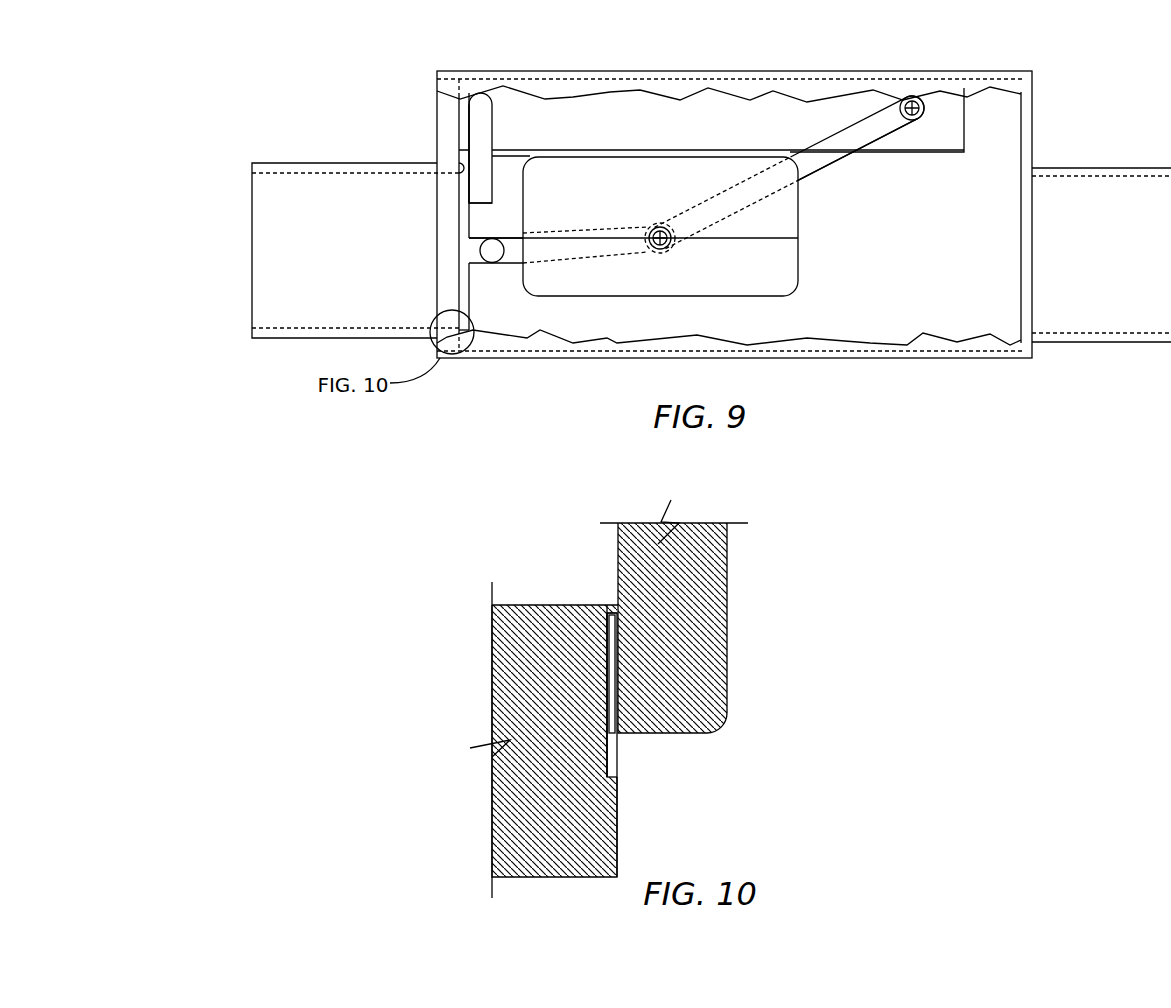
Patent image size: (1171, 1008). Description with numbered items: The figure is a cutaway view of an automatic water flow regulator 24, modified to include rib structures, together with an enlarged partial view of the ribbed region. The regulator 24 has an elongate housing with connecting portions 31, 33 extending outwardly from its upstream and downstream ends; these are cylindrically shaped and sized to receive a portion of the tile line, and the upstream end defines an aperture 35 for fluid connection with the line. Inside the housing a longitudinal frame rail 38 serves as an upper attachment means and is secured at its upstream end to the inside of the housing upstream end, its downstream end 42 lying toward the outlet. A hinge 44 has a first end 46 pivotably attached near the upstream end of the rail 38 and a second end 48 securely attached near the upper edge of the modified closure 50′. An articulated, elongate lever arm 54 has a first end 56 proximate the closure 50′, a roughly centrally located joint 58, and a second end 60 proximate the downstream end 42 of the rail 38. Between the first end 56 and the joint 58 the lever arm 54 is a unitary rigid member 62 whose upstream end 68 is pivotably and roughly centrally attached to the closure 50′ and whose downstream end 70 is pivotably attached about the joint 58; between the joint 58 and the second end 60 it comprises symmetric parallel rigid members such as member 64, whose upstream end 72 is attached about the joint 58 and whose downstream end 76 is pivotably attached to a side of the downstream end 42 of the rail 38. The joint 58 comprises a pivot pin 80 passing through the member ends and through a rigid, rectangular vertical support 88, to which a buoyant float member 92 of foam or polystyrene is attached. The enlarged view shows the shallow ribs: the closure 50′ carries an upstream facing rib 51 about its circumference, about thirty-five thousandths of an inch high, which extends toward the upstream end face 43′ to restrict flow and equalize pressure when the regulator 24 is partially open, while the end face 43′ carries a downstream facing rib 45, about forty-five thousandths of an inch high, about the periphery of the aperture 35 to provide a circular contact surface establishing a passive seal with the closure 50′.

In FIG. 9, the automatic water flow regulator 24 is at (894, 412).
In FIG. 9, the connecting portion 31 is at (322, 162).
In FIG. 9, the connecting portion 33 is at (1090, 167).
In FIG. 10, the aperture 35 is at (565, 603).
In FIG. 9, the longitudinal frame rail 38 is at (698, 138).
In FIG. 9, the downstream end of rail 42 is at (965, 118).
In FIG. 9, the upstream end face 43′ is at (461, 171).
In FIG. 10, the upstream end face 43′ is at (617, 813).
In FIG. 9, the hinge 44 is at (490, 127).
In FIG. 10, the end face rib 45 is at (612, 610).
In FIG. 9, the first end of hinge 46 is at (481, 100).
In FIG. 9, the second end of hinge 48 is at (485, 160).
In FIG. 9, the modified closure 50′ is at (473, 308).
In FIG. 10, the modified closure 50′ is at (665, 700).
In FIG. 10, the closure rib 51 is at (618, 735).
In FIG. 9, the lever arm 54 is at (787, 208).
In FIG. 9, the first end of lever arm 56 is at (485, 294).
In FIG. 9, the joint 58 is at (681, 277).
In FIG. 9, the second end of lever arm 60 is at (904, 70).
In FIG. 9, the unitary rigid member 62 is at (554, 263).
In FIG. 9, the symmetric rigid member 64 is at (827, 160).
In FIG. 9, the upstream end of unitary member 68 is at (514, 207).
In FIG. 9, the downstream end of unitary member 70 is at (643, 225).
In FIG. 9, the upstream end of symmetric member 72 is at (709, 262).
In FIG. 9, the downstream end of symmetric member 76 is at (926, 162).
In FIG. 9, the pivot pin 80 is at (640, 258).
In FIG. 9, the vertical support 88 is at (749, 281).
In FIG. 9, the float member 92 is at (600, 198).